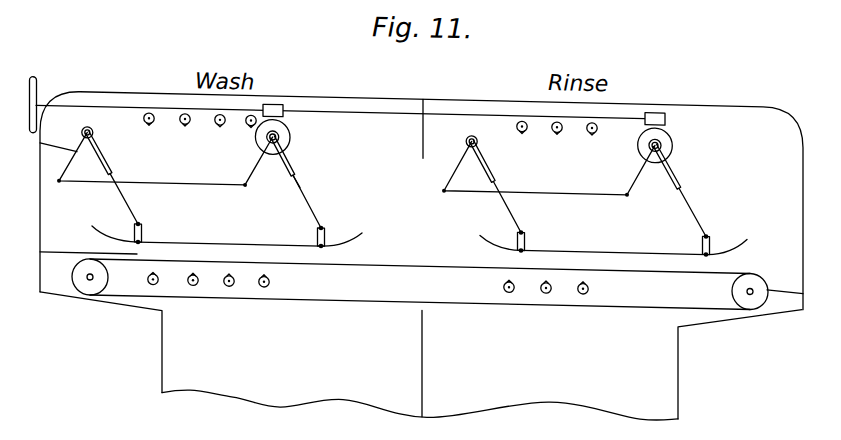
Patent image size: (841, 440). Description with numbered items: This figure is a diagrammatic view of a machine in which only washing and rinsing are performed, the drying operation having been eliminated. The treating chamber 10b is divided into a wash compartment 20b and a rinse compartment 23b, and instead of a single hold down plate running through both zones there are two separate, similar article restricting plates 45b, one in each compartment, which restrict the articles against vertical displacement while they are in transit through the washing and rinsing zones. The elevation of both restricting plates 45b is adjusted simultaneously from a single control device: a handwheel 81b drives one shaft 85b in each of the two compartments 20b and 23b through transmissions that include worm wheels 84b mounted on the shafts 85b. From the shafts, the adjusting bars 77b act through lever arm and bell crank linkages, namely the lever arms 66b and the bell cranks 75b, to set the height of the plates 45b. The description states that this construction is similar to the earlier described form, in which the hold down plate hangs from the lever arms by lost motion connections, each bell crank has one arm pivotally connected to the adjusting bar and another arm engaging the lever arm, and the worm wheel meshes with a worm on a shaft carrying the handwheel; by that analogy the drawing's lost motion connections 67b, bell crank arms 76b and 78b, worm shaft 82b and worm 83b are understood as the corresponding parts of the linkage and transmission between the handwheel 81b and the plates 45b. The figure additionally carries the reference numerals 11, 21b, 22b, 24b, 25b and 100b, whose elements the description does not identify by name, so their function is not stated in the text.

The treating chamber 10b is at (665, 87).
The conveyor belt 11 is at (406, 256).
The wash compartment 20b is at (389, 139).
The conveyor openings (wash) 21b is at (198, 281).
The wash spray nozzles 22b is at (214, 120).
The rinse compartment 23b is at (750, 198).
The conveyor openings (rinse) 24b is at (553, 283).
The rinse spray nozzles 25b is at (562, 121).
The article restricting plate 45b is at (193, 238).
The lever arm 66b is at (128, 202).
The slider 67b is at (134, 229).
The bell crank 75b is at (105, 156).
The connecting rod 76b is at (252, 162).
The adjusting bar 77b is at (153, 178).
The crank pin 78b is at (286, 160).
The handwheel 81b is at (37, 84).
The drive rail 82b is at (394, 103).
The bearing block 83b is at (273, 98).
The worm wheel 84b is at (290, 133).
The shaft 85b is at (266, 131).
The lower housing 100b is at (160, 356).